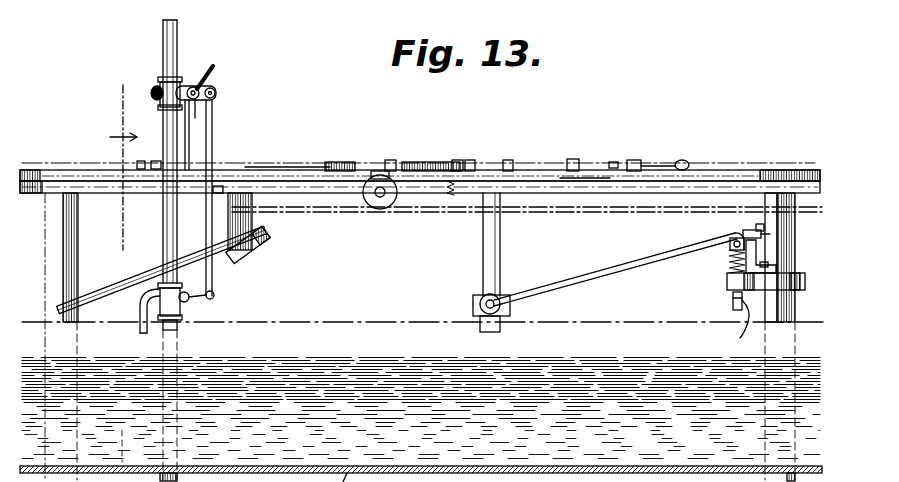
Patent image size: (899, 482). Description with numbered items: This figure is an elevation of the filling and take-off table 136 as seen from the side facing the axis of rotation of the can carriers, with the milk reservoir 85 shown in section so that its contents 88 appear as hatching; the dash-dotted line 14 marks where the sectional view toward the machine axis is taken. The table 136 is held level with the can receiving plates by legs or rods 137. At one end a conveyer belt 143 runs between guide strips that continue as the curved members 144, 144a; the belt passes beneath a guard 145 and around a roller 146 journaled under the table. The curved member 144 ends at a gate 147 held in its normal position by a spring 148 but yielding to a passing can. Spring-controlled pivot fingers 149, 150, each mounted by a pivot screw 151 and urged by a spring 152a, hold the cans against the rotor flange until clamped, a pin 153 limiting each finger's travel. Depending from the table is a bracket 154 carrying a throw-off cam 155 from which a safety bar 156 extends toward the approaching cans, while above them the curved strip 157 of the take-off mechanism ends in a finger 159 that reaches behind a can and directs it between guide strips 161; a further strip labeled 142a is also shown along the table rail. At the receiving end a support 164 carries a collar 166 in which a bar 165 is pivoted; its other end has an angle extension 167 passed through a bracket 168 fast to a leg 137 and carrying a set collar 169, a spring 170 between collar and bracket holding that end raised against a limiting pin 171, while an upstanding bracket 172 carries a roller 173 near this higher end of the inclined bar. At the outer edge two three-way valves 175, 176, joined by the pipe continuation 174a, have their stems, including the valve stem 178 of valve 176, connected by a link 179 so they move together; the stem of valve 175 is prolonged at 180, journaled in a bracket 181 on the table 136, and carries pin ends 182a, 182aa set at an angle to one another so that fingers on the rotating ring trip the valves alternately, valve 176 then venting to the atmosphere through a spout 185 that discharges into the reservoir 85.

The section line 14— 14 is at (123, 157).
The reservoir 85 is at (422, 335).
The liquid 88 is at (421, 420).
The table 136 is at (292, 171).
The legs or rods 137 is at (70, 218).
The rack bar 142a is at (731, 163).
The conveyer belt 143 is at (568, 213).
The curved continuation 144 is at (487, 164).
The curved continuation 144a is at (412, 162).
The guard 145 is at (376, 151).
The roller 146 is at (382, 209).
The gate 147 is at (449, 163).
The spring 148 is at (452, 188).
The spring controlled pivot finger 149 is at (571, 160).
The spring controlled pivot finger 150 is at (650, 164).
The pivot screw 151 is at (632, 160).
The pins 152a is at (612, 162).
The pin 153 is at (592, 180).
The bracket 154 is at (244, 207).
The throw-off cam 155 is at (248, 248).
The safety bar 156 is at (162, 269).
The curved strip 157 is at (340, 162).
The finger 159 is at (263, 166).
The guide strips 161 is at (67, 166).
The support 164 is at (502, 258).
The bar 165 is at (618, 270).
The collar 166 is at (472, 304).
The angle extension 167 is at (732, 302).
The bracket 168 is at (727, 282).
The set collar 169 is at (730, 241).
The spring 170 is at (728, 262).
The limiting pin 171 is at (730, 323).
The bracket 172 is at (756, 253).
The roller 173 is at (762, 233).
The pipe continuation 174a is at (168, 212).
The valve 175 is at (153, 101).
The valve 176 is at (180, 312).
The valve stem 178 is at (188, 300).
The link 179 is at (209, 205).
The stem prolongation 180 is at (197, 90).
The bracket 181 is at (190, 146).
The pin end 182a is at (202, 78).
The lever arm 182aa is at (197, 113).
The spout 185 is at (140, 328).